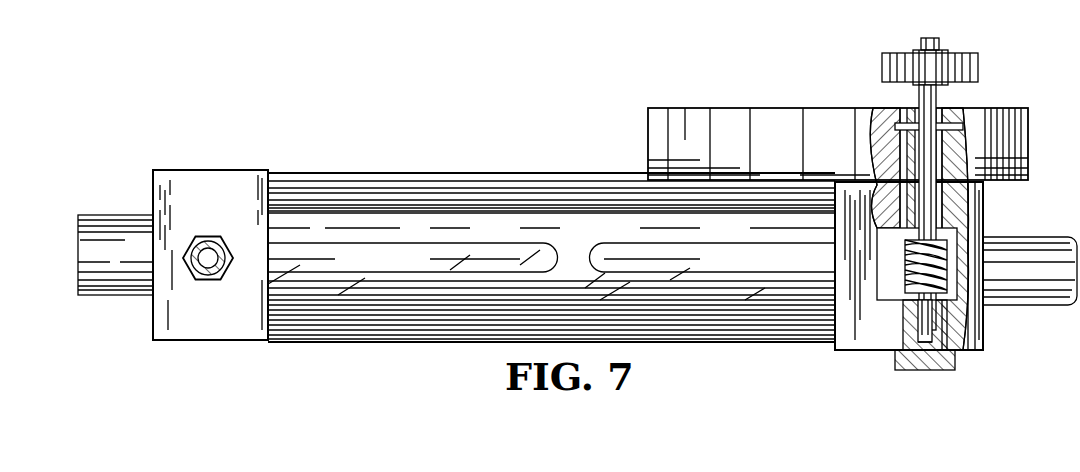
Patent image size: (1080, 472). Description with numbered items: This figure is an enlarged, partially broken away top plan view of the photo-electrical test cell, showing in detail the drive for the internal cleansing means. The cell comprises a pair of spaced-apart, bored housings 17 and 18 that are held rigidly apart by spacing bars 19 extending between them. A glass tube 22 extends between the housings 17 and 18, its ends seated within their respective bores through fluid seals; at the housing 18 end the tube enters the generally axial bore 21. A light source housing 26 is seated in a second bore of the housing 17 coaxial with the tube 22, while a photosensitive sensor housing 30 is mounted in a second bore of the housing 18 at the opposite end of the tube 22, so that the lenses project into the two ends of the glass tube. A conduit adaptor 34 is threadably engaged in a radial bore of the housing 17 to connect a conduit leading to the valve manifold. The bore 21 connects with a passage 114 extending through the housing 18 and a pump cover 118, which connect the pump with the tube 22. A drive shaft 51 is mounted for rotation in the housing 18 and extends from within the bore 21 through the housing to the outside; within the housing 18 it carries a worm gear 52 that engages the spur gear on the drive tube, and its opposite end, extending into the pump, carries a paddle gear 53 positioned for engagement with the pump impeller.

The housing 17 is at (244, 170).
The housing 18 is at (983, 327).
The spacing bars 19 is at (509, 178).
The axial bore 21 is at (893, 296).
The glass tube 22 is at (396, 226).
The light source housing 26 is at (112, 214).
The photosensitive sensor housing 30 is at (1076, 236).
The conduit adaptor 34 is at (223, 238).
The drive shaft 51 is at (942, 108).
The worm gear 52 is at (948, 256).
The paddle gear 53 is at (978, 56).
The passage 114 is at (905, 110).
The pump cover 118 is at (648, 118).